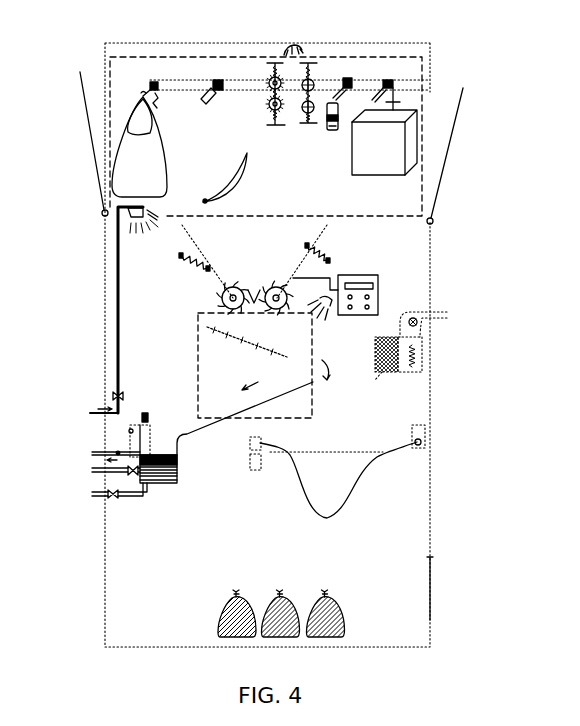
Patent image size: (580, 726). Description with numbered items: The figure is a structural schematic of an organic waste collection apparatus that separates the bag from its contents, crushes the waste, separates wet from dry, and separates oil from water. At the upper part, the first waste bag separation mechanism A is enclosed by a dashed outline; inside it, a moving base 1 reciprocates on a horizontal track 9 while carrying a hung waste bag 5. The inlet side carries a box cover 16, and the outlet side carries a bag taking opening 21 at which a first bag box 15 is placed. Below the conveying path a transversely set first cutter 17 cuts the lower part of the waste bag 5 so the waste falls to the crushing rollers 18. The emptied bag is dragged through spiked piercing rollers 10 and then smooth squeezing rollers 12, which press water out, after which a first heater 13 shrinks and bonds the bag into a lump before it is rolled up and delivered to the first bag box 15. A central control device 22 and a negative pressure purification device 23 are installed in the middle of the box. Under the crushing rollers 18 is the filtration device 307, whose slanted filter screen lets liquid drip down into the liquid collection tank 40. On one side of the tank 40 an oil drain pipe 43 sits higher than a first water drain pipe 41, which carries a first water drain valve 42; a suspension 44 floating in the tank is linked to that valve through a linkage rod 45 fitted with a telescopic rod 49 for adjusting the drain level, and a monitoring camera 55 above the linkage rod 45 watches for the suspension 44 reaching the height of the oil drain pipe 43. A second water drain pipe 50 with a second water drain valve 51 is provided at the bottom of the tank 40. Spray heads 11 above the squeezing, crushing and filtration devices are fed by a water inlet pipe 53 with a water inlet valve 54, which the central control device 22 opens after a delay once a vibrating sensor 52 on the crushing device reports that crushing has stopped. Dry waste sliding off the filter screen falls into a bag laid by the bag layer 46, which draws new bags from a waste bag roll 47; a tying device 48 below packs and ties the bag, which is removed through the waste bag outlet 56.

The moving base 1 is at (152, 83).
The waste bag 5 is at (117, 138).
The horizontal track 9 is at (197, 80).
The piercing rollers 10 is at (270, 78).
The spray head 11 is at (290, 46).
The squeezing rollers 12 is at (317, 63).
The first heater 13 is at (350, 78).
The first bag box 15 is at (400, 117).
The box cover 16 is at (93, 150).
The first cutter 17 is at (203, 202).
The crushing rollers 18 is at (210, 293).
The bag taking opening 21 is at (450, 138).
The central control device 22 is at (378, 290).
The negative pressure purification device 23 is at (417, 357).
The filtration device 307 is at (198, 328).
The liquid collection tank 40 is at (173, 483).
The first water drain pipe 41 is at (92, 470).
The first water drain valve 42 is at (92, 495).
The oil drain pipe 43 is at (92, 453).
The suspension 44 is at (118, 452).
The linkage rod 45 is at (132, 443).
The bag layer 46 is at (262, 443).
The waste bag roll 47 is at (423, 441).
The tying device 48 is at (262, 462).
The telescopic rod 49 is at (130, 433).
The second water drain pipe 50 is at (130, 472).
The second water drain valve 51 is at (110, 493).
The sensor 52 is at (180, 263).
The water inlet pipe 53 is at (117, 368).
The water inlet valve 54 is at (117, 393).
The monitoring camera 55 is at (143, 418).
The waste bag outlet 56 is at (432, 603).
The first waste bag separation mechanism A is at (422, 183).